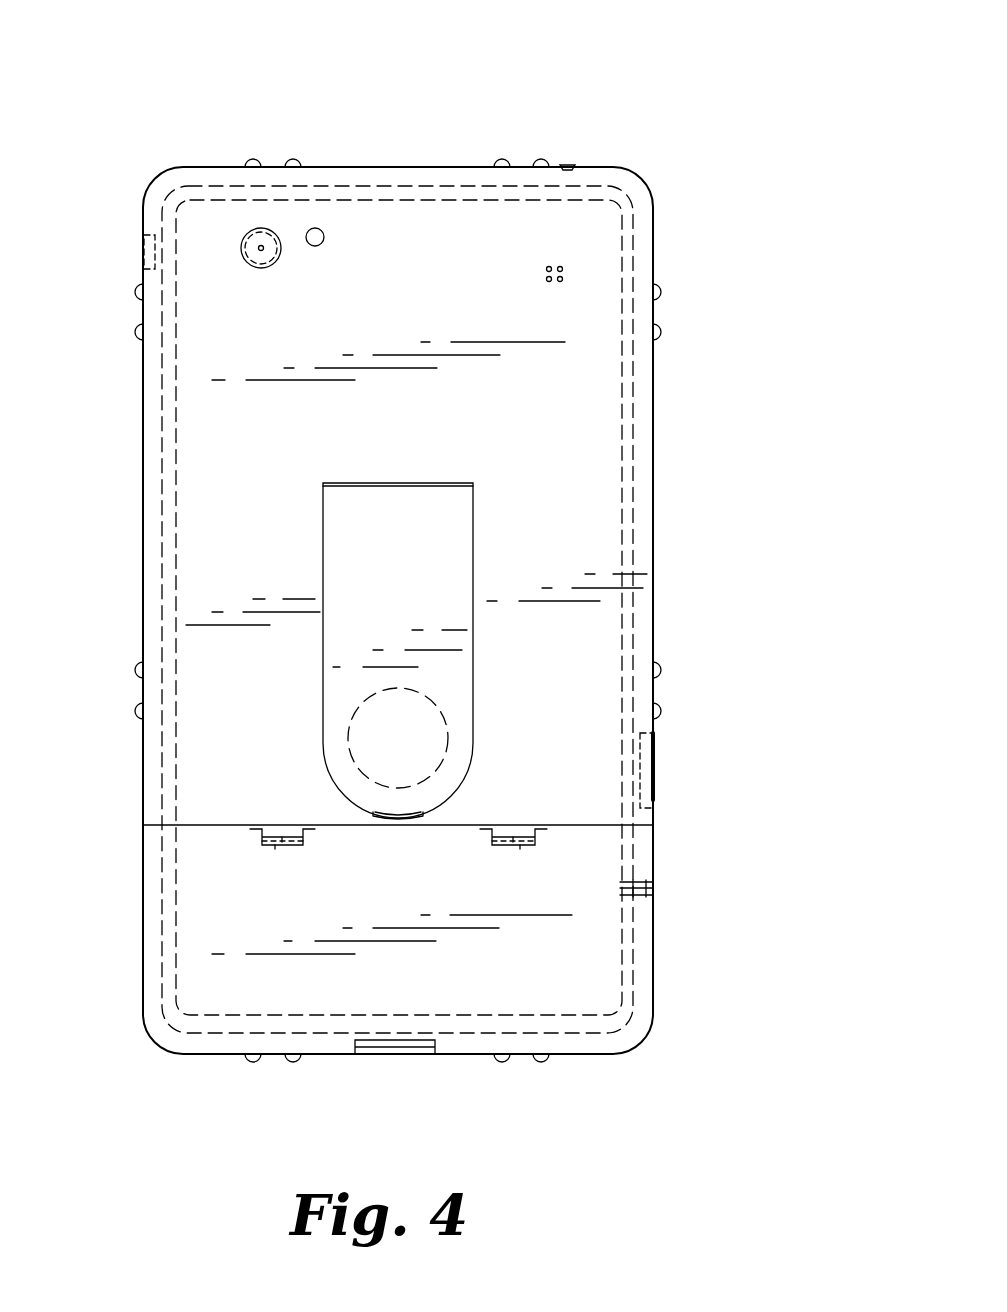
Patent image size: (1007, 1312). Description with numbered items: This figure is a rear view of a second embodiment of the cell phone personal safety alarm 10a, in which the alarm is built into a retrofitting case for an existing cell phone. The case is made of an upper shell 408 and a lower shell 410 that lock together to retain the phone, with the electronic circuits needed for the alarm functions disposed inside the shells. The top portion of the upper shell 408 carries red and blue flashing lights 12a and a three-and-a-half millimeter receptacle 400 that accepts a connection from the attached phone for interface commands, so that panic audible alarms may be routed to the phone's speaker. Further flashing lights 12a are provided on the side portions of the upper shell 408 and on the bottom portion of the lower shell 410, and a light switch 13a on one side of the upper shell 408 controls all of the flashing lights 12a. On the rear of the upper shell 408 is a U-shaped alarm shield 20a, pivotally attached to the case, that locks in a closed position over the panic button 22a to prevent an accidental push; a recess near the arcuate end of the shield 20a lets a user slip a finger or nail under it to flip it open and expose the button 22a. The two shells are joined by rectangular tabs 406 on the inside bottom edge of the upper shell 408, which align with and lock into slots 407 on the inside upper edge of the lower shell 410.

The electronic device case 10a is at (803, 113).
The red and blue flashing lights 12a is at (293, 158).
The light switch 13a is at (657, 757).
The U-shaped alarm shield 20a is at (428, 599).
The panic button 22a is at (440, 700).
The 3.5 mm receptacle 400 is at (566, 164).
The rectangular tabs 406 is at (240, 822).
The slots 407 is at (285, 888).
The upper shell 408 is at (113, 513).
The lower shell 410 is at (113, 935).